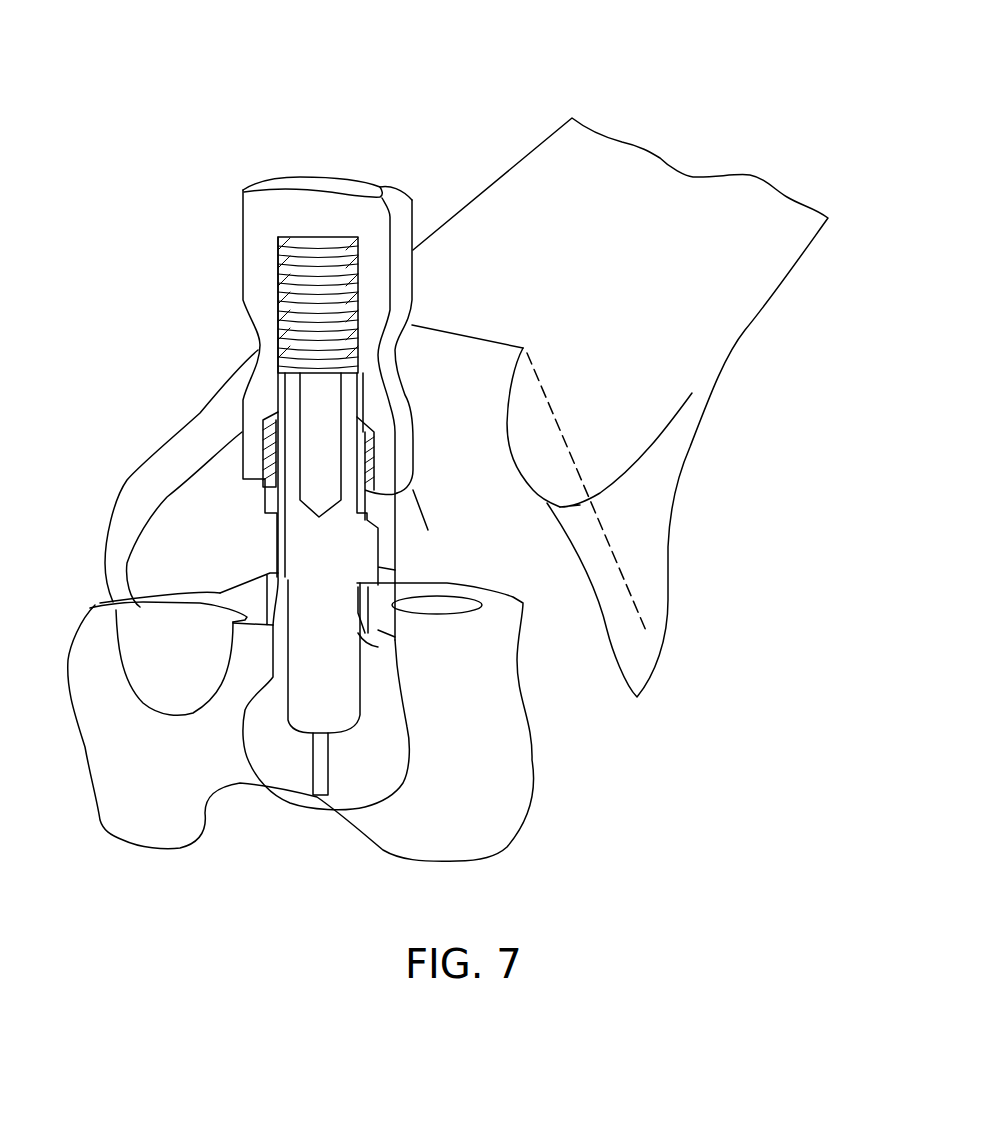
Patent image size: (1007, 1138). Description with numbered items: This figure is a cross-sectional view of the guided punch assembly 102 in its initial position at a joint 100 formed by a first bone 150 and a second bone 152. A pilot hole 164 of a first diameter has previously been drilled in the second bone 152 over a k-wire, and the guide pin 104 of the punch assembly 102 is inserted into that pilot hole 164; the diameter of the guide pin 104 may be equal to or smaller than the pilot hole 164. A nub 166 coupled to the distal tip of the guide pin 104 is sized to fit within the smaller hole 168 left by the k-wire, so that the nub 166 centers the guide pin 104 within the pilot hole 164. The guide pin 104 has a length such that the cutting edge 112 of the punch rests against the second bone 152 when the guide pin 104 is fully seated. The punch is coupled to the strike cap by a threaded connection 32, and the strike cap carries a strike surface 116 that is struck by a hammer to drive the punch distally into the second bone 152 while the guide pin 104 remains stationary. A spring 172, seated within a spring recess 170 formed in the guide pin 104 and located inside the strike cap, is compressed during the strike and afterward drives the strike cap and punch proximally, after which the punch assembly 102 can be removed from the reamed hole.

The joint 100 is at (476, 102).
The guided punch assembly 102 is at (293, 160).
The strike surface 116 is at (348, 178).
The spring 172 is at (277, 263).
The spring recess 170 is at (302, 396).
The threaded connection 32 is at (263, 479).
The cutting edge 112 is at (390, 637).
The guide pin 104 is at (333, 695).
The pilot hole 164 is at (249, 762).
The hole 168 is at (330, 740).
The nub 166 is at (330, 735).
The first bone 150 is at (623, 142).
The second bone 152 is at (123, 840).